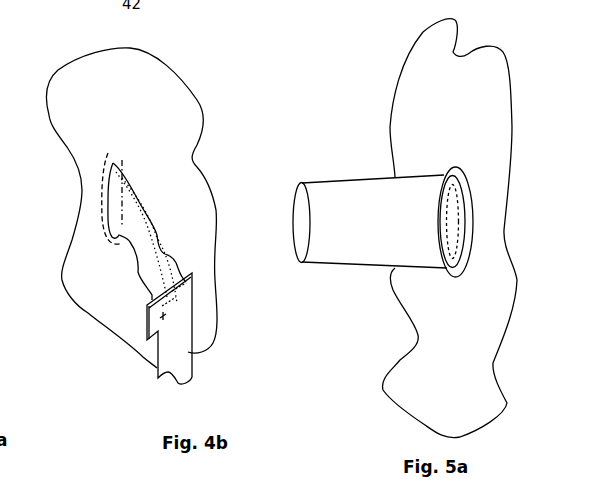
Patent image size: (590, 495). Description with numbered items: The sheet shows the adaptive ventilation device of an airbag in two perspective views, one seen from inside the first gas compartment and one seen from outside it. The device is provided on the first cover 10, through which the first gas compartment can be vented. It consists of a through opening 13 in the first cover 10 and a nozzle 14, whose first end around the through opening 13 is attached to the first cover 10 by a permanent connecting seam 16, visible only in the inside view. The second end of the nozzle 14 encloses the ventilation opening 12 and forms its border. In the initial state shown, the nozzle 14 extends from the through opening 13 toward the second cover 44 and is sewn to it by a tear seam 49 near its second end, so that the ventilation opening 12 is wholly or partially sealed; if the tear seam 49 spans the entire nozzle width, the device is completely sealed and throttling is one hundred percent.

In FIG. 4B, the first cover 10 is at (187, 110).
In FIG. 5A, the first cover 10 is at (420, 77).
In FIG. 5A, the ventilation opening 12 is at (300, 222).
In FIG. 5A, the through opening 13 is at (456, 210).
In FIG. 4B, the nozzle 14 is at (137, 200).
In FIG. 5A, the nozzle 14 is at (352, 246).
In FIG. 4B, the permanent connecting seam 16 is at (103, 188).
In FIG. 4B, the second cover 44 is at (167, 343).
In FIG. 4B, the tear seam 49 is at (177, 303).